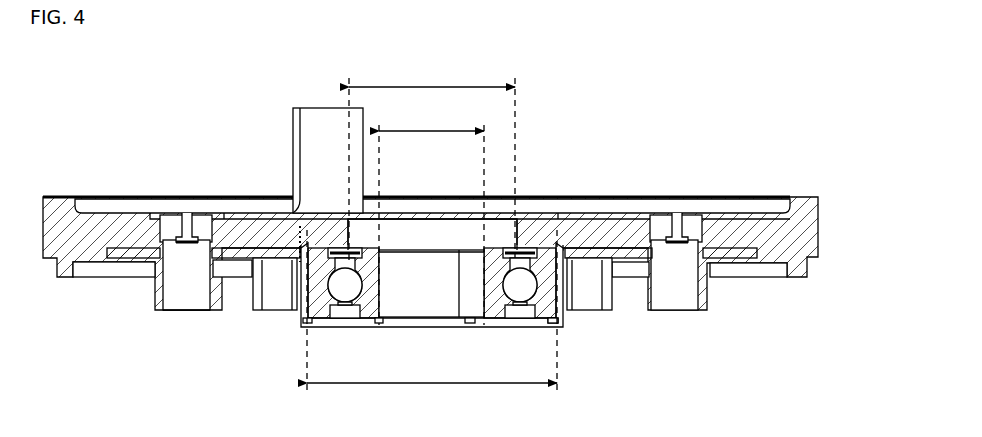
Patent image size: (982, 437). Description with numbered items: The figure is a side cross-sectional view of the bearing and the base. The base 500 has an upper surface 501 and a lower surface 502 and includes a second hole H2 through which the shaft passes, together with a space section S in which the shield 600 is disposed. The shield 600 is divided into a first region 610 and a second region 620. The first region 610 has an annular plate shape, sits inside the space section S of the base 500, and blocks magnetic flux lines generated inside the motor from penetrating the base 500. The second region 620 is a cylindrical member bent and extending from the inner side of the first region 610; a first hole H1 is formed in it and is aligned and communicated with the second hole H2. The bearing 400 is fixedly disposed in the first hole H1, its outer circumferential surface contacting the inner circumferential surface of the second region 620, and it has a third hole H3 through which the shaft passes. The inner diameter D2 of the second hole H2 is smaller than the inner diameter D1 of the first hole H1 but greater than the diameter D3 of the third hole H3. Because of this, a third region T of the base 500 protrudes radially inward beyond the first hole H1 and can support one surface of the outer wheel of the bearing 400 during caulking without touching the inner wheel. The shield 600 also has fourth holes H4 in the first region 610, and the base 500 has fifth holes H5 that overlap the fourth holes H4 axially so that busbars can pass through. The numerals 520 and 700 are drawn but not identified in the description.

The base 500 is at (798, 185).
The upper surface 501 is at (737, 212).
The lower surface 502 is at (752, 270).
The lower support plate 520 is at (155, 296).
The fastening bolt 700 is at (180, 232).
The shield 600 is at (393, 318).
The first region 610 is at (240, 322).
The second region 620 is at (300, 322).
The bearing 400 is at (373, 322).
The space section S is at (122, 247).
The third region T is at (292, 165).
The first hole H1 is at (547, 326).
The second hole H2 is at (437, 229).
The third hole H3 is at (426, 289).
The fourth hole H4 is at (140, 216).
The fifth hole H5 is at (224, 215).
The inner diameter of the first hole D1 is at (432, 398).
The inner diameter of the second hole D2 is at (432, 73).
The diameter of the third hole D3 is at (431, 117).